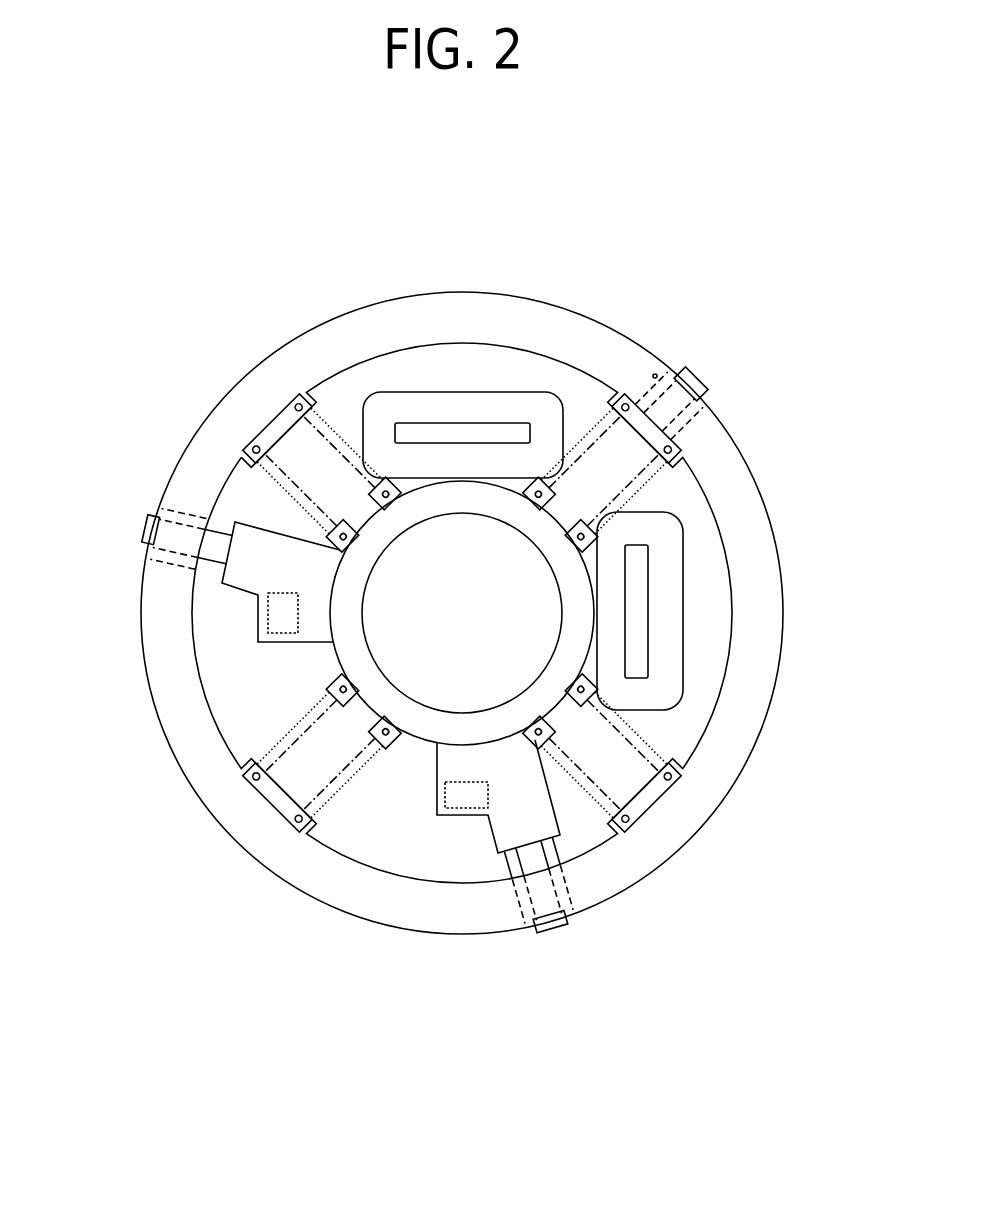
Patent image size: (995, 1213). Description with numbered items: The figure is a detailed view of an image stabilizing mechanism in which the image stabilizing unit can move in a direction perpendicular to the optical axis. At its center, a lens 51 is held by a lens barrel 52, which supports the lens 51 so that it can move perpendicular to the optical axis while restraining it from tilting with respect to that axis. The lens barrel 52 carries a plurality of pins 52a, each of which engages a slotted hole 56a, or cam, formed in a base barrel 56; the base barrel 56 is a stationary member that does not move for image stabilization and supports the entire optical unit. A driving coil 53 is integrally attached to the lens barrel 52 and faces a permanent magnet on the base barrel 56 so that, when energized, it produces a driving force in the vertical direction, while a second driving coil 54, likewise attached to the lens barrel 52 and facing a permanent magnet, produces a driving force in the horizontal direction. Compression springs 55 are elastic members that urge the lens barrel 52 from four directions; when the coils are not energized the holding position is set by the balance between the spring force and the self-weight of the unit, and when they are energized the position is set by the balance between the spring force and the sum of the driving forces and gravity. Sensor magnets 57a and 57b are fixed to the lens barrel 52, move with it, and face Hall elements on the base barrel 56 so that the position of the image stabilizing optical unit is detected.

The lens 51 is at (383, 648).
The lens barrel 52 is at (337, 647).
The pin 52a is at (702, 370).
The driving coil 53 is at (668, 598).
The driving coil 54 is at (438, 408).
The compression spring 55 is at (337, 457).
The base barrel 56 is at (541, 324).
The slotted hole 56a is at (655, 375).
The sensor magnet 57a is at (285, 614).
The sensor magnet 57b is at (468, 795).